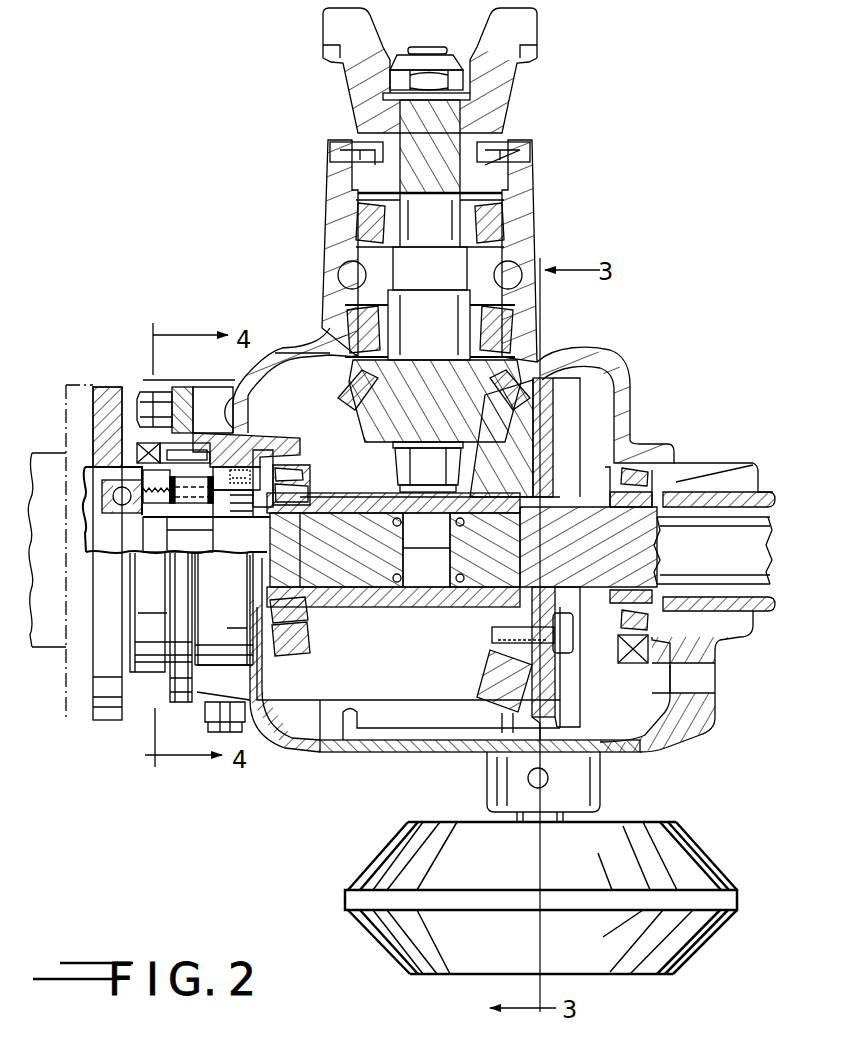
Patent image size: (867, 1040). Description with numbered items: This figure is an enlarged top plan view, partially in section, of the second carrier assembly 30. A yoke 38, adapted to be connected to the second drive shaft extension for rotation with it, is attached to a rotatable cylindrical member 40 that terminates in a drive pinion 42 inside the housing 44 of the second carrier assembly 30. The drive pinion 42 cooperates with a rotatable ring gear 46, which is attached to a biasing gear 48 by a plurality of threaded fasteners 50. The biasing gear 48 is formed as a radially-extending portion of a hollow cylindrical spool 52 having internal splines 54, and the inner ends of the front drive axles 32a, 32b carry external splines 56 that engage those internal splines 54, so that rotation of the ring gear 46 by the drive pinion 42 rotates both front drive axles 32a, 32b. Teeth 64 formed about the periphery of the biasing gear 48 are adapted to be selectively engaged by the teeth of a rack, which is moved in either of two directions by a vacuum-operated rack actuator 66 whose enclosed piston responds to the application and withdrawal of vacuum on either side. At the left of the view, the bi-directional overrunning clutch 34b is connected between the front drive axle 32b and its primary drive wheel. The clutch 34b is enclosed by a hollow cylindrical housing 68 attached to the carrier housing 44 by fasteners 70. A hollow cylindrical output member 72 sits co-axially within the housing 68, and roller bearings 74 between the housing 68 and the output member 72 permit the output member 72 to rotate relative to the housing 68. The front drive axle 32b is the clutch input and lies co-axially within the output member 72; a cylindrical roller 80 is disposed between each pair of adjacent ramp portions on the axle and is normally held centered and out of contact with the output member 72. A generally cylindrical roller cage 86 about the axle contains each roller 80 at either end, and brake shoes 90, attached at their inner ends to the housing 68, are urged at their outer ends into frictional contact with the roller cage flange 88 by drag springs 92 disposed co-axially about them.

The second carrier assembly 30 is at (290, 213).
The front drive axle 32a is at (752, 553).
The front drive axle 32b is at (253, 556).
The bi-directional overrunning clutch 34b is at (140, 372).
The yoke 38 is at (505, 82).
The rotatable cylindrical member 40 is at (437, 135).
The drive pinion 42 is at (478, 398).
The housing 44 is at (283, 350).
The ring gear 46 is at (513, 452).
The biasing gear 48 is at (557, 677).
The threaded fasteners 50 is at (487, 637).
The hollow cylindrical spool 52 is at (363, 593).
The internal splines 54 is at (433, 567).
The external splines 56 is at (385, 525).
The teeth 64 is at (542, 380).
The vacuum-operated rack actuator 66 is at (647, 843).
The hollow cylindrical housing 68 is at (193, 385).
The fasteners 70 is at (157, 377).
The hollow cylindrical output member 72 is at (105, 462).
The roller bearings 74 is at (193, 453).
The cylindrical roller 80 is at (212, 448).
The roller cage 86 is at (127, 387).
The roller cage flange 88 is at (243, 483).
The brake shoes 90 is at (267, 466).
The drag springs 92 is at (262, 500).